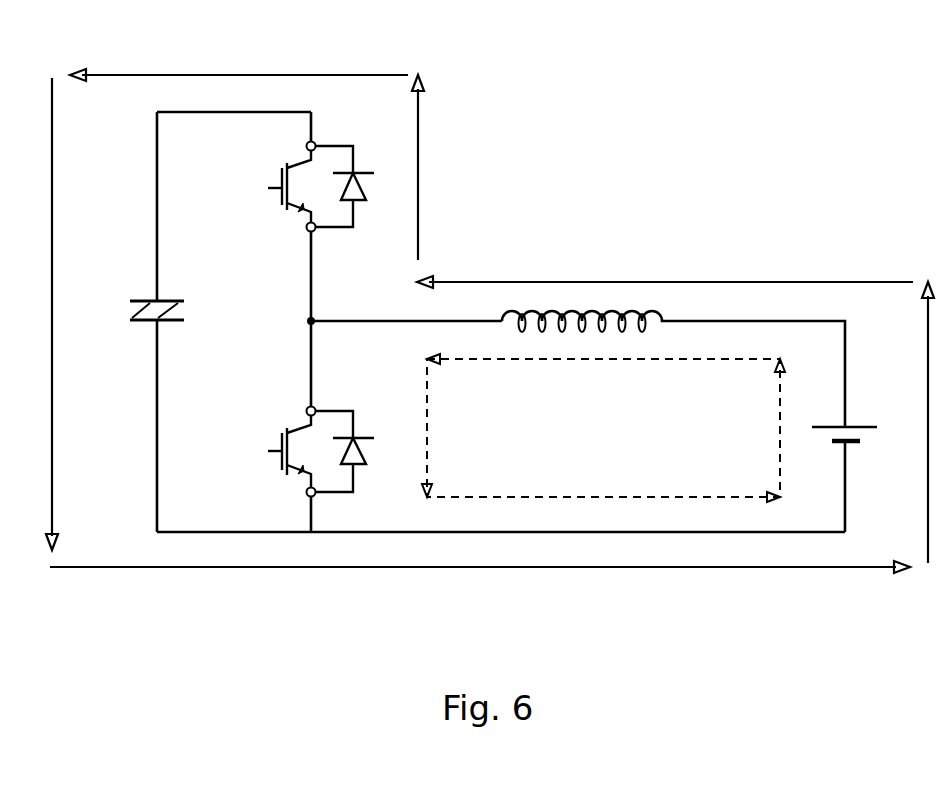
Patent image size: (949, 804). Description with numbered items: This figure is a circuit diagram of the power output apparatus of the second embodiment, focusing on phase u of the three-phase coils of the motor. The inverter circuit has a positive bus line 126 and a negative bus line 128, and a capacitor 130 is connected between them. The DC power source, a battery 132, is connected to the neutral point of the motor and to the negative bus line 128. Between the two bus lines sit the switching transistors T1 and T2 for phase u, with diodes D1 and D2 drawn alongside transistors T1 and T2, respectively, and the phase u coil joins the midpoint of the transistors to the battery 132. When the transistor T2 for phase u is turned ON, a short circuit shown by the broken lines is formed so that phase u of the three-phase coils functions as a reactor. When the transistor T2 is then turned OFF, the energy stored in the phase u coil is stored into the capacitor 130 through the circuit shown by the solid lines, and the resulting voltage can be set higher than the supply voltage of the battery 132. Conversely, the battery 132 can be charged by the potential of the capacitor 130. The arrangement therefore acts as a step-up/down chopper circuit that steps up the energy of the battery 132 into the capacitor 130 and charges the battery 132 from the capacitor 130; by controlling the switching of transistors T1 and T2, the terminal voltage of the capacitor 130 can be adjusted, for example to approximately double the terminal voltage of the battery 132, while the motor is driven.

The positive bus line 126 is at (237, 110).
The negative bus line 128 is at (217, 530).
The capacitor 130 is at (142, 300).
The DC power source 132 is at (866, 425).
The transistor T1 is at (283, 212).
The upper arm freewheeling diode D1 is at (355, 215).
The transistor T2 is at (278, 428).
The lower arm freewheeling diode D2 is at (360, 430).
The phase u is at (458, 305).